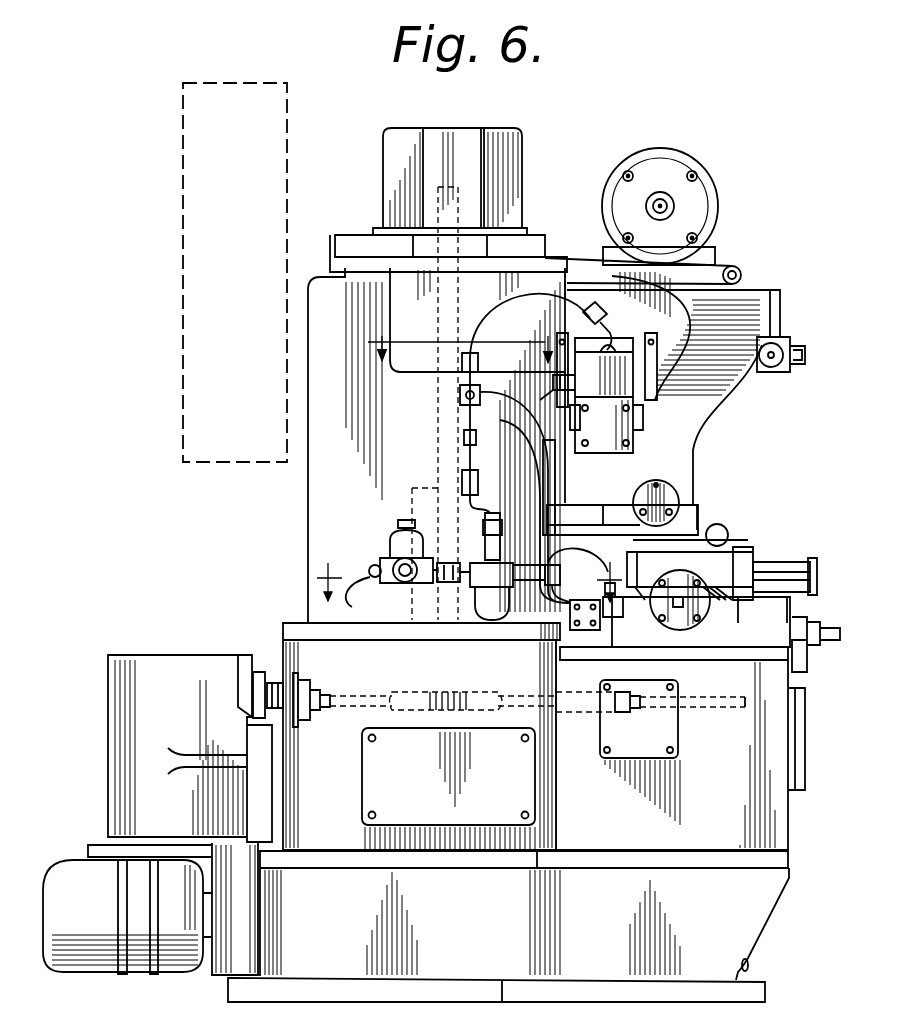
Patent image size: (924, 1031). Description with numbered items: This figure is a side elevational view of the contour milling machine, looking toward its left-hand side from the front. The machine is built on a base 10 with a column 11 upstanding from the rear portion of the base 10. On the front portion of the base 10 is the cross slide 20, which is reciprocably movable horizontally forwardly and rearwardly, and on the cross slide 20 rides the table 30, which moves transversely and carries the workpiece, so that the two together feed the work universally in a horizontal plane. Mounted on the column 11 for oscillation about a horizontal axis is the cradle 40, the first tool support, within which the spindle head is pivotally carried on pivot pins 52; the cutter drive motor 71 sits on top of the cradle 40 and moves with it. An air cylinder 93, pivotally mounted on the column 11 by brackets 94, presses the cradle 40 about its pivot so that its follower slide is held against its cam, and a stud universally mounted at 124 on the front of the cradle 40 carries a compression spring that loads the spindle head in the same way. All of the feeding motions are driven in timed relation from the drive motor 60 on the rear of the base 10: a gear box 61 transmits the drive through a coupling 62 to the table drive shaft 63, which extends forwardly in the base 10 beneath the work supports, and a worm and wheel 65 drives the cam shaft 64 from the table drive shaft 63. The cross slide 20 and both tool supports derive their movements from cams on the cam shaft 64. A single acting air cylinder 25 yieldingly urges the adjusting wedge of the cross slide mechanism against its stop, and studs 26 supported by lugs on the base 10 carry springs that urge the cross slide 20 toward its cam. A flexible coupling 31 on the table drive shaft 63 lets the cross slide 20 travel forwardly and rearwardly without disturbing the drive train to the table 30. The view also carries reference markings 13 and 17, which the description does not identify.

The base 10 is at (307, 278).
The column 11 is at (240, 512).
The reference axis line 13 is at (469, 567).
The handwheel 17 is at (728, 565).
The cross slide 20 is at (737, 633).
The single acting air cylinder 25 is at (618, 617).
The studs 26 is at (827, 623).
The table 30 is at (728, 562).
The flexible coupling 31 is at (577, 717).
The cradle 40 is at (735, 373).
The pivot pins 52 is at (668, 498).
The drive motor 60 is at (135, 975).
The gear box 61 is at (154, 668).
The coupling 62 is at (292, 670).
The table drive shaft 63 is at (335, 717).
The cam shaft 64 is at (455, 200).
The worm and wheel 65 is at (403, 690).
The cutter drive motor 71 is at (718, 210).
The air cylinder 93 is at (612, 445).
The brackets 94 is at (480, 390).
The universal mounting 124 is at (783, 372).